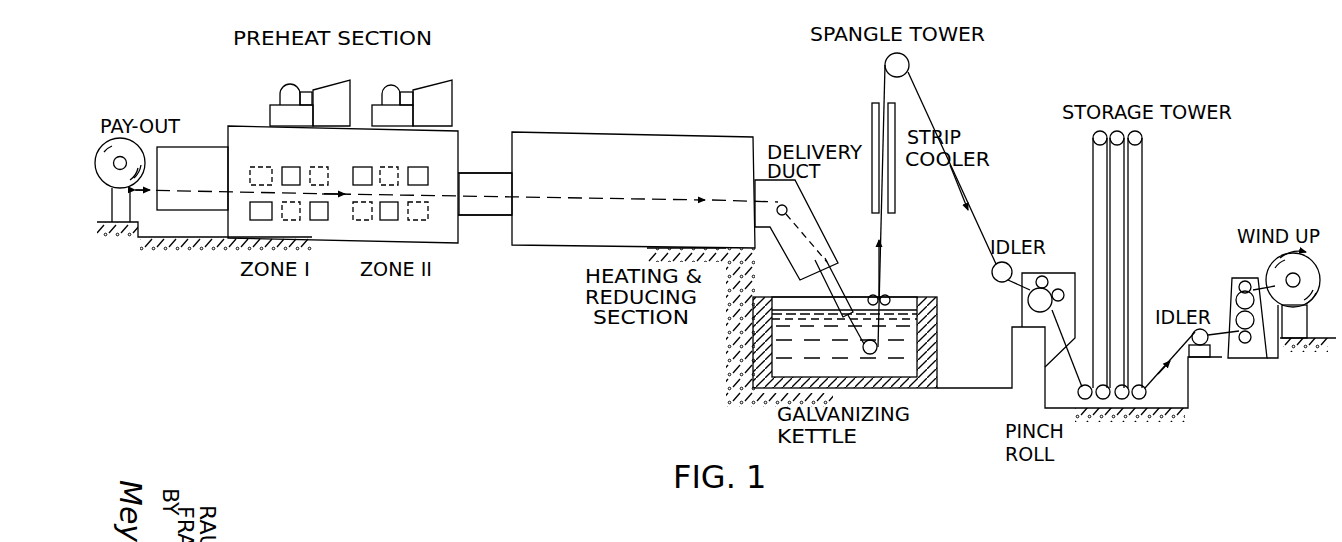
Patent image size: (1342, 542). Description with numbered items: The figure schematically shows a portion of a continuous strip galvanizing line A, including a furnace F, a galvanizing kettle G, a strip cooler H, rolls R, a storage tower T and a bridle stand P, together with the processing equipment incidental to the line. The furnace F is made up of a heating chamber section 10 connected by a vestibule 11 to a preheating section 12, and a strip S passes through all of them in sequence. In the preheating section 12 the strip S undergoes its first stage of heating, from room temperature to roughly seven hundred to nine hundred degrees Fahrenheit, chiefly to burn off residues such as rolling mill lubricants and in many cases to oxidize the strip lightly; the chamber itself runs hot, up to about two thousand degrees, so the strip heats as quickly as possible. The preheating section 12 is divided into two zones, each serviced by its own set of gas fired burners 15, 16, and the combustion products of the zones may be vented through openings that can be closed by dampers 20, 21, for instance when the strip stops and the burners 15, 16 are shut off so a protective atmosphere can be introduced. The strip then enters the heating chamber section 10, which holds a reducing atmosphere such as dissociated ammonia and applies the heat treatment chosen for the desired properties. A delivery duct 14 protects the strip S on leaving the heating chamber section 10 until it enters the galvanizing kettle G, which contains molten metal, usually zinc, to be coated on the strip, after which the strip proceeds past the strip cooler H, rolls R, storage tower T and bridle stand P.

The heating chamber section 10 is at (618, 142).
The vestibule 11 is at (490, 207).
The preheating section 12 is at (333, 230).
The delivery duct 14 is at (807, 223).
The gas fired burners 15 is at (286, 160).
The gas fired burners 16 is at (406, 160).
The damper 20 is at (280, 95).
The damper 21 is at (387, 95).
The continuous strip galvanizing line A is at (577, 70).
The furnace F is at (483, 130).
The strip S is at (622, 200).
The strip cooler H is at (868, 108).
The galvanizing kettle G is at (902, 277).
The rolls R is at (1055, 263).
The storage tower T is at (1157, 183).
The bridle stand P is at (1220, 265).